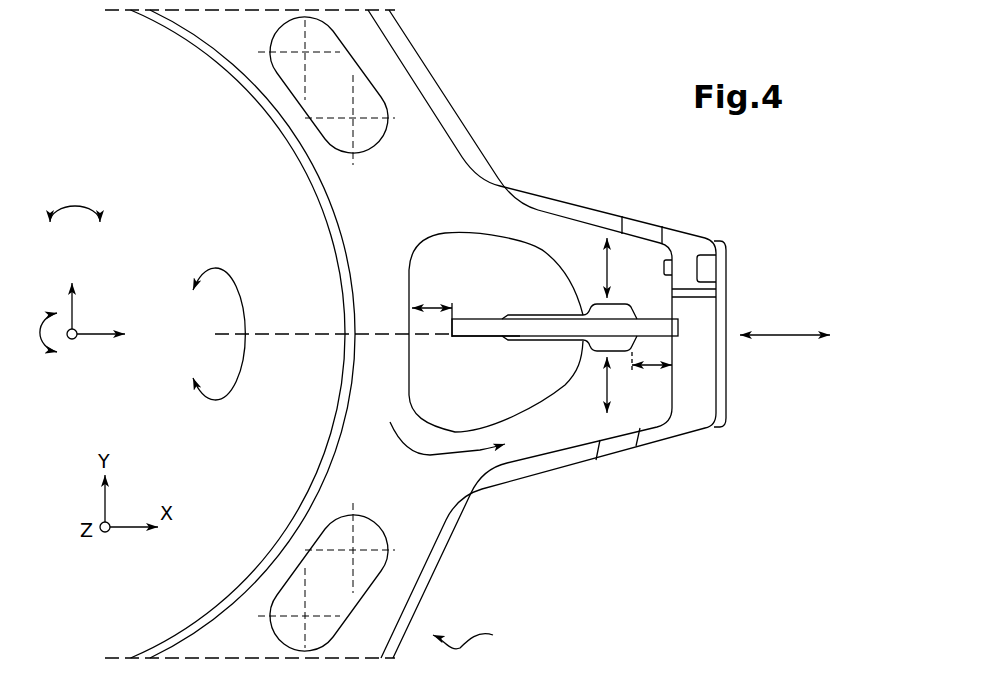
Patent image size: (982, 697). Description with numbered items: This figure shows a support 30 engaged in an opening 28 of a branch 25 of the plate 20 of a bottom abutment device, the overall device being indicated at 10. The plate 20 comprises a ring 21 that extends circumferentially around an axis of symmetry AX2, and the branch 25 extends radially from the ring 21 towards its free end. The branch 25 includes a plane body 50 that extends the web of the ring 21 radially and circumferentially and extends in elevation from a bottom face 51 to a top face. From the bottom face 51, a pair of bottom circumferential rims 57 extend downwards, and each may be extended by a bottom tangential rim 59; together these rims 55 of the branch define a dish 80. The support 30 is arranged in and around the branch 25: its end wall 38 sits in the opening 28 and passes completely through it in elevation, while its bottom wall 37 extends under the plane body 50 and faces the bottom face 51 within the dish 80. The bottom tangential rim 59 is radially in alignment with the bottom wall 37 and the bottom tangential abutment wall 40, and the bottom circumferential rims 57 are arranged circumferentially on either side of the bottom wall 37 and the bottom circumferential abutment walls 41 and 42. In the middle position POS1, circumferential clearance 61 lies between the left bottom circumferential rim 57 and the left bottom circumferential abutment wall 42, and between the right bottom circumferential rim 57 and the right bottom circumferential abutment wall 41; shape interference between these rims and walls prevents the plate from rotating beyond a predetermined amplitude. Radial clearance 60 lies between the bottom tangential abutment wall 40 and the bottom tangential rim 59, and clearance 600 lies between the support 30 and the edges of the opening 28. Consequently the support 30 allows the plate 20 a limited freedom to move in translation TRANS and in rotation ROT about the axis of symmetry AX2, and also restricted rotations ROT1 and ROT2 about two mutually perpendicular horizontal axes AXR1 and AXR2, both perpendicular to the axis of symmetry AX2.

The steering wheel 10 is at (568, 550).
The plate 20 is at (503, 125).
The ring 21 is at (408, 92).
The branch 25 is at (512, 497).
The opening 28 is at (452, 411).
The support 30 is at (536, 317).
The bottom wall 37 is at (557, 347).
The end wall 38 is at (513, 338).
The bottom tangential abutment wall 40 is at (647, 343).
The right bottom circumferential abutment wall 41 is at (582, 352).
The left bottom circumferential abutment wall 42 is at (597, 302).
The plane body 50 is at (557, 248).
The bottom face 51 is at (582, 433).
The rims 55 is at (598, 460).
The bottom circumferential rim 57 is at (623, 230).
The bottom tangential rim 59 is at (718, 295).
The radial clearance 60 is at (650, 368).
The circumferential clearance 61 is at (598, 250).
The dish 80 is at (430, 433).
The clearance 600 is at (433, 305).
The translation TRANS is at (785, 321).
The middle position POS1 is at (493, 638).
The horizontal axis AXR1 is at (100, 327).
The horizontal axis AXR2 is at (73, 308).
The axis of symmetry AX2 is at (82, 345).
The rotation ROT is at (50, 352).
The rotation ROT1 is at (220, 321).
The rotation ROT2 is at (75, 199).